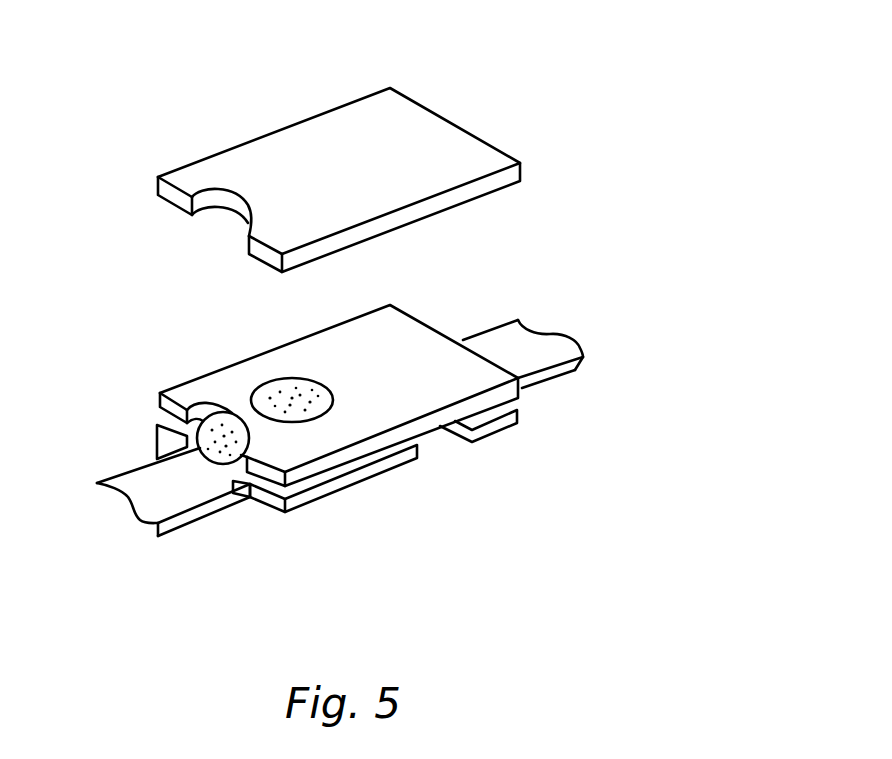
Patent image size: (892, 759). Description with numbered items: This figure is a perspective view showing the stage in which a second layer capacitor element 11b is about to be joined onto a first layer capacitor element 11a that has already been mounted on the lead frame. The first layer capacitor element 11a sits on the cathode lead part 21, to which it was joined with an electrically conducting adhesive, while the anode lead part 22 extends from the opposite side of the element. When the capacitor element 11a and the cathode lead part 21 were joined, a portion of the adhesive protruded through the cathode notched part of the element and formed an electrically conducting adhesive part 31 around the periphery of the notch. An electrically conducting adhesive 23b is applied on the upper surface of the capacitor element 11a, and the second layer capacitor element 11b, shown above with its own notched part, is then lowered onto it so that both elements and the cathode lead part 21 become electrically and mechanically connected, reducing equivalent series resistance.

The capacitor element 11a is at (412, 343).
The capacitor element 11b is at (333, 147).
The cathode lead part 21 is at (372, 472).
The anode lead part 22 is at (497, 422).
The electrically conducting adhesive 23b is at (297, 426).
The electrically conducting adhesive part 31 is at (232, 466).